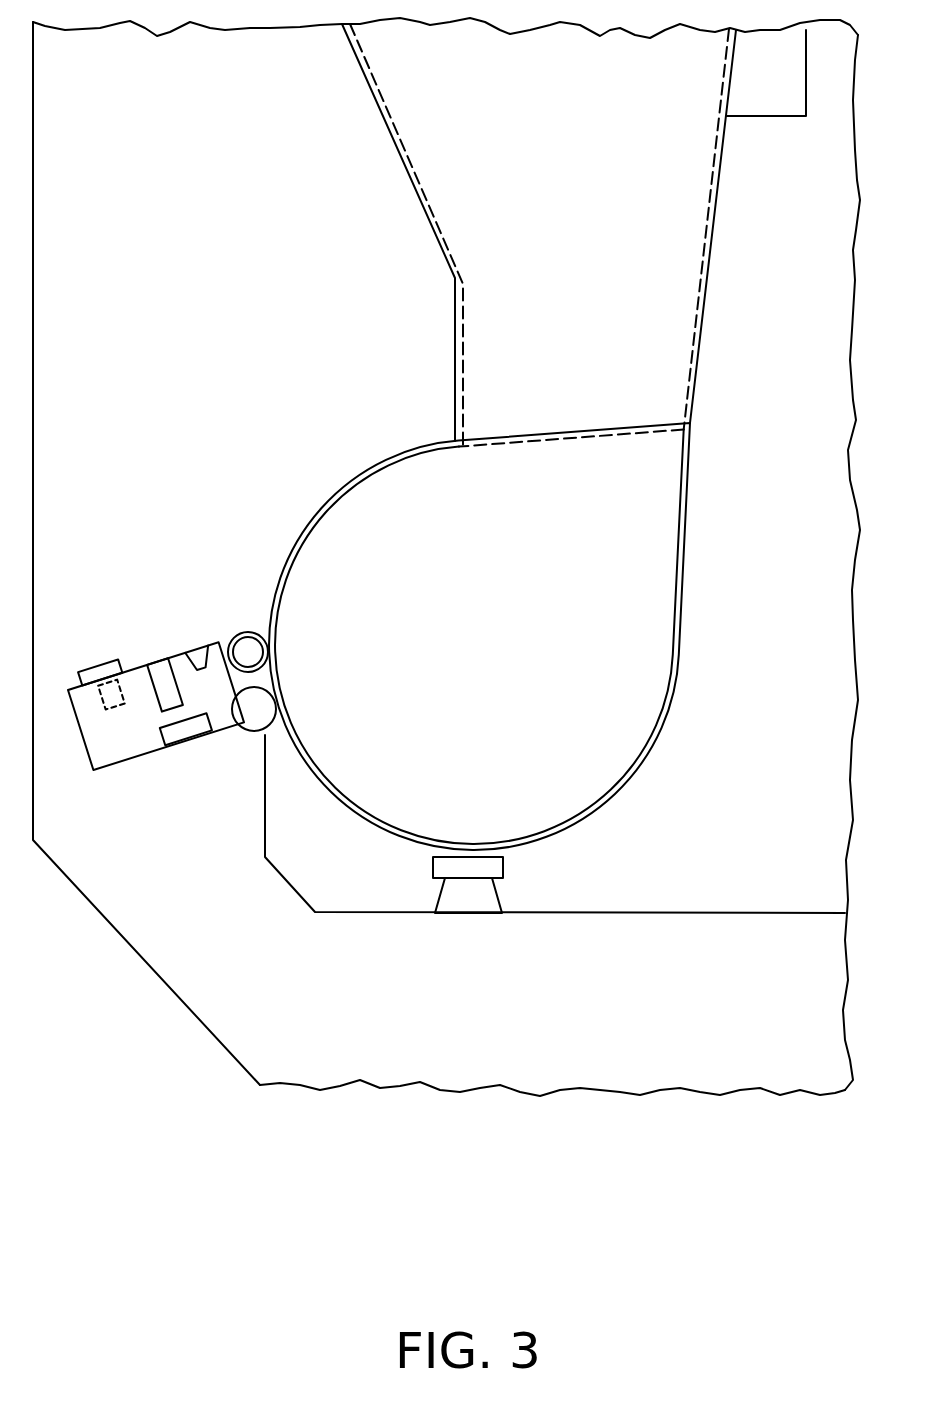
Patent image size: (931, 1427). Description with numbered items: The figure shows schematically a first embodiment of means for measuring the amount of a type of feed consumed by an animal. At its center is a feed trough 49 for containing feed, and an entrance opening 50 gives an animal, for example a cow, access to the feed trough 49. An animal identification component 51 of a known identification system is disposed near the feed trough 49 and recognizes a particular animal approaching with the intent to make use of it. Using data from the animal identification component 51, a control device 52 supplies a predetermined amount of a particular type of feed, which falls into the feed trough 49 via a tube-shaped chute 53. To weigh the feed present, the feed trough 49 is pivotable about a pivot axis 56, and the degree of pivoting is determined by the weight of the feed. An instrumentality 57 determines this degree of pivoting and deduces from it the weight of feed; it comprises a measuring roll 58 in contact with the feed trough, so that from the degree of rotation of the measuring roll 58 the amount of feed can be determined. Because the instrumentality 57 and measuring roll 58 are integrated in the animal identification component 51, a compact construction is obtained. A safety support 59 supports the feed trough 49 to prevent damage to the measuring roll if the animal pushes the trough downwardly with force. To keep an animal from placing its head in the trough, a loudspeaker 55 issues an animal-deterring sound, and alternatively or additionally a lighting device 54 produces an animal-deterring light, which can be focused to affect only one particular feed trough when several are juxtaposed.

The feed trough 49 is at (643, 750).
The entrance opening 50 is at (348, 472).
The animal identification component 51 is at (103, 745).
The control device 52 is at (769, 80).
The tube-shaped chute 53 is at (707, 295).
The lighting device 54 is at (162, 673).
The loudspeaker 55 is at (193, 658).
The pivot axis 56 is at (248, 652).
The instrumentality 57 is at (183, 733).
The measuring roll 58 is at (268, 727).
The safety support 59 is at (480, 897).